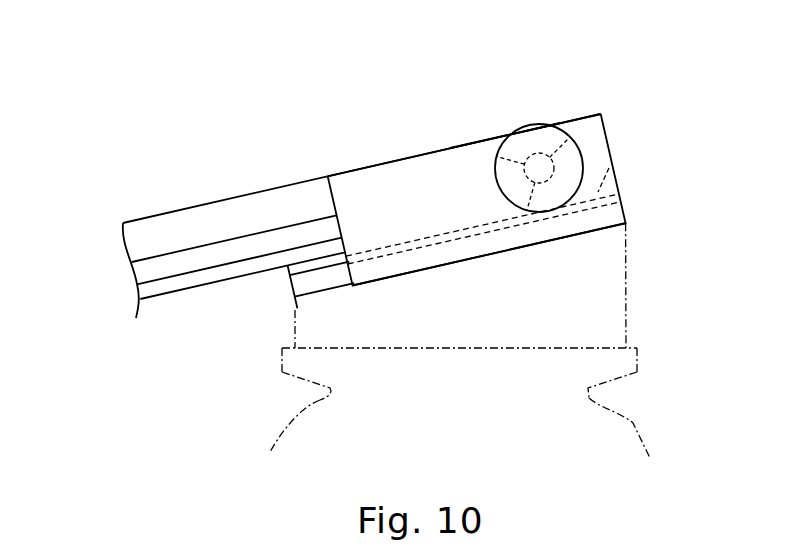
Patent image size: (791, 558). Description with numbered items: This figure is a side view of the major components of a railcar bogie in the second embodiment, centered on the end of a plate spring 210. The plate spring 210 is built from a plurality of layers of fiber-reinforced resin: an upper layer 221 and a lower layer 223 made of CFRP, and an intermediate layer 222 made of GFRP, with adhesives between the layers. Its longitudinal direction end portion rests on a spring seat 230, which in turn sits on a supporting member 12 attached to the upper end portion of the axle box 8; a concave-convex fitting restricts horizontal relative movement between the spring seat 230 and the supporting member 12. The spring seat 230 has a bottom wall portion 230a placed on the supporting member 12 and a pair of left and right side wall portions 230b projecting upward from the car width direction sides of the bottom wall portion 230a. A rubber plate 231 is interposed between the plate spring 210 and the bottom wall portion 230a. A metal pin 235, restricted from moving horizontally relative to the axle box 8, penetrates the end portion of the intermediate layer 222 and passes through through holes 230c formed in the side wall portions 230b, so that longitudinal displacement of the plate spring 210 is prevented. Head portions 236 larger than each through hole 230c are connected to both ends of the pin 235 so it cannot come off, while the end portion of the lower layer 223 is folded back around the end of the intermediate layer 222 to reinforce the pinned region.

The plate spring 210 is at (197, 204).
The upper layer 221 is at (153, 232).
The intermediate layer 222 is at (150, 273).
The lower layer 223 is at (183, 282).
The spring seat 230 is at (363, 165).
The bottom wall portion 230a is at (608, 213).
The side wall portion 230b is at (427, 153).
The through hole 230c is at (492, 139).
The rubber plate 231 is at (613, 164).
The pin 235 is at (569, 134).
The head portion 236 is at (567, 155).
The supporting member 12 is at (625, 308).
The axle box 8 is at (632, 422).